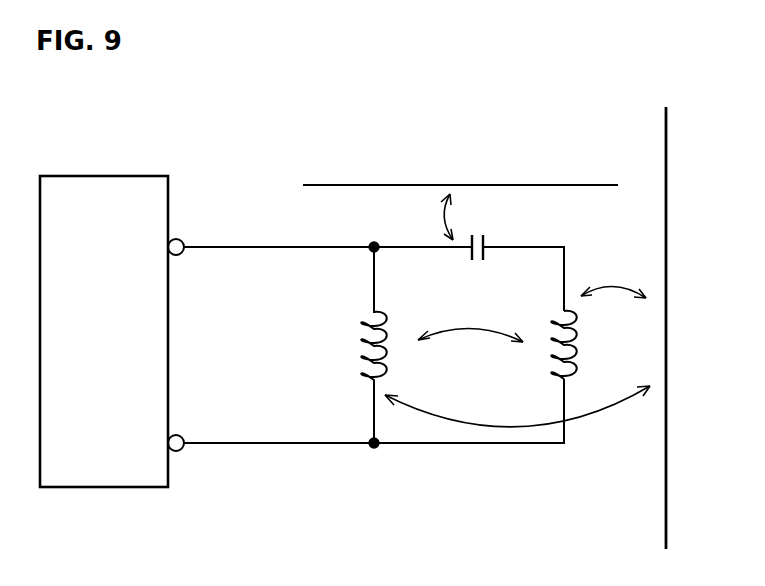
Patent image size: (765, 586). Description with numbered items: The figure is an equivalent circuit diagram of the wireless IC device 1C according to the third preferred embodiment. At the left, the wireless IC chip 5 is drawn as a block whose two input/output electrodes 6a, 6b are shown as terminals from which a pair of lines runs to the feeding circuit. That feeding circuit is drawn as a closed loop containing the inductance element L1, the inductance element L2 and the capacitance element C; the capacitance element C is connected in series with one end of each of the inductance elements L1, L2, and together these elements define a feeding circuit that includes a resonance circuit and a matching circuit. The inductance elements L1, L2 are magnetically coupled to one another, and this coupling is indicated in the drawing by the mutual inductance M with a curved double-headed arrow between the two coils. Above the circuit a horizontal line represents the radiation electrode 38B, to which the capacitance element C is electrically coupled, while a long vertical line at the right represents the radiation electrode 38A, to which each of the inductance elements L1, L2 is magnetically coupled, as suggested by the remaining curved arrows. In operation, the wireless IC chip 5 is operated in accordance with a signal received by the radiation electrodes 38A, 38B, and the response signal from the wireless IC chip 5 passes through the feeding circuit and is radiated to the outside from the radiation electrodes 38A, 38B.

The wireless IC chip 5 is at (134, 176).
The input/output electrode 6a is at (178, 238).
The input/output electrode 6b is at (180, 450).
The wireless IC device 1C is at (428, 52).
The capacitance element C is at (490, 259).
The inductance element L1 is at (357, 345).
The inductance element L2 is at (547, 346).
The mutual inductance M is at (470, 318).
The radiation electrode 38A is at (667, 148).
The radiation electrode 38B is at (552, 185).